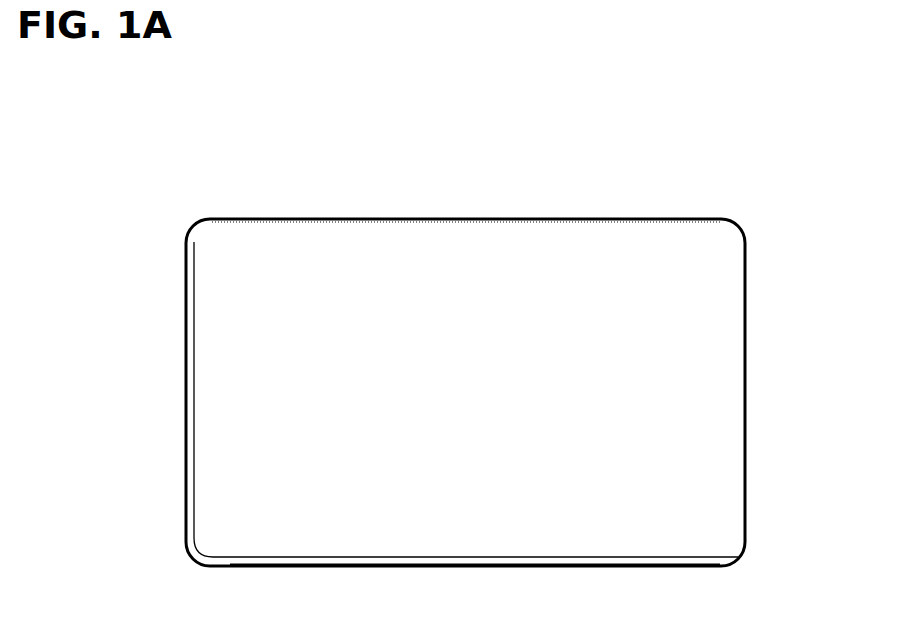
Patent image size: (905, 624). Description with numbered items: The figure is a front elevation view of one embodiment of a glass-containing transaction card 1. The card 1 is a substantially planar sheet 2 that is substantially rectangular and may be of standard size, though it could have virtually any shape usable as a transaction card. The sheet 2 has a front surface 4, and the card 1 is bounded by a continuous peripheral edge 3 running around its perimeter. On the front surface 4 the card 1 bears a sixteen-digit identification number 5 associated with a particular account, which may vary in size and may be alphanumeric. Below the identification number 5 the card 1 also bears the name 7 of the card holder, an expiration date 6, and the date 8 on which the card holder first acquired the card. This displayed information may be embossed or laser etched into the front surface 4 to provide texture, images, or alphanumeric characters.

The transaction card 1 is at (394, 216).
The planar sheet 2 is at (245, 273).
The continuous peripheral edge 3 is at (584, 572).
The front surface 4 is at (685, 288).
The sixteen-digit identification number 5 is at (416, 390).
The expiration date 6 is at (545, 461).
The name of the card holder 7 is at (275, 522).
The date on which the card holder first acquired the card 8 is at (275, 460).